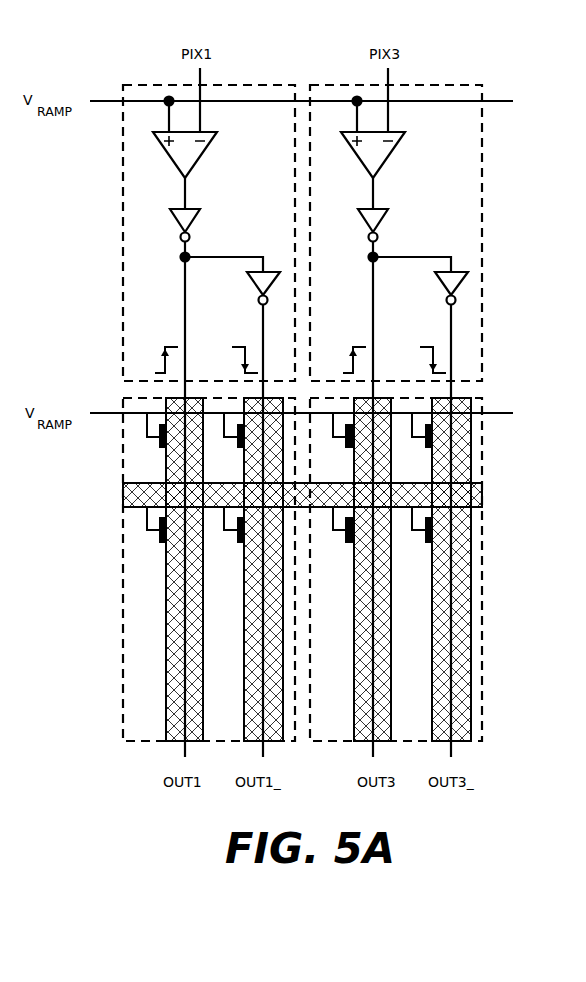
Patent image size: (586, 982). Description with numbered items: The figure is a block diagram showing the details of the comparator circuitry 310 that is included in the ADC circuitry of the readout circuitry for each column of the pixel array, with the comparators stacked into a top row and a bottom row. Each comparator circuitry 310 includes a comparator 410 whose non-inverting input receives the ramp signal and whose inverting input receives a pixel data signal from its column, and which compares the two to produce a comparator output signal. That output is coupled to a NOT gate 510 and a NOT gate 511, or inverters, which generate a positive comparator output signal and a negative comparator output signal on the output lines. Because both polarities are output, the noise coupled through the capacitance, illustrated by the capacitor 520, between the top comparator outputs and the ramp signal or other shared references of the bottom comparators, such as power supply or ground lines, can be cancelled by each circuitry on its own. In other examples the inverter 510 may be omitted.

The comparator circuitry 310 is at (296, 391).
The comparator 410 is at (168, 148).
The NOT gate 510 is at (200, 216).
The NOT gate 511 is at (247, 279).
The capacitor 520 is at (158, 530).